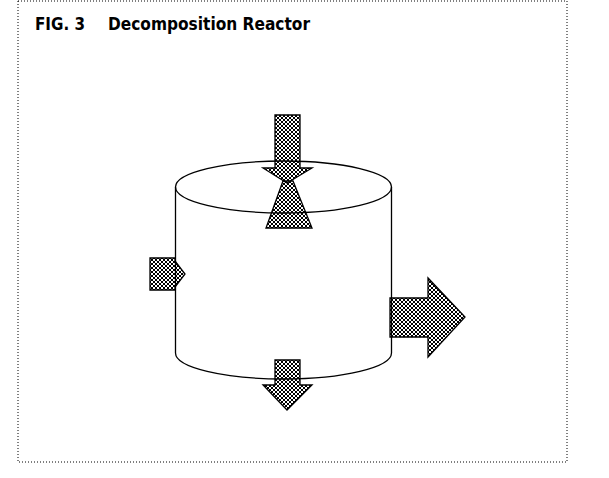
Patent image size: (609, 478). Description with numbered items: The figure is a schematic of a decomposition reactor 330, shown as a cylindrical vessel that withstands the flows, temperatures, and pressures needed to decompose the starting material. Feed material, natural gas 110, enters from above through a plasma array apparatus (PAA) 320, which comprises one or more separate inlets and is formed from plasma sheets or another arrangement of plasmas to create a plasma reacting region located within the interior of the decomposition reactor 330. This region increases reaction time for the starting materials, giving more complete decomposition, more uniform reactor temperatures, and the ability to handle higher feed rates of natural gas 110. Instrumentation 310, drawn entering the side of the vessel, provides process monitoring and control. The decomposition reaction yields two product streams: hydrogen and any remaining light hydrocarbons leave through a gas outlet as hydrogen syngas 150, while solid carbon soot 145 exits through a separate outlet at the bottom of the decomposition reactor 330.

The natural gas 110 is at (285, 122).
The plasma array apparatus (PAA) 320 is at (307, 200).
The decomposition reactor 330 is at (284, 270).
The instrumentation 310 is at (110, 270).
The hydrogen syngas 150 is at (471, 283).
The solid carbon soot 145 is at (234, 404).